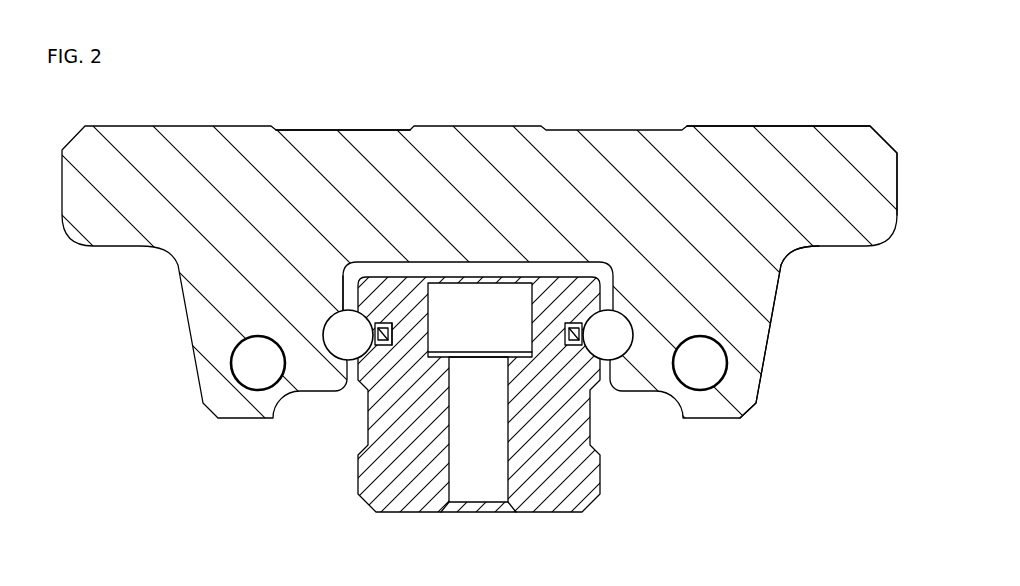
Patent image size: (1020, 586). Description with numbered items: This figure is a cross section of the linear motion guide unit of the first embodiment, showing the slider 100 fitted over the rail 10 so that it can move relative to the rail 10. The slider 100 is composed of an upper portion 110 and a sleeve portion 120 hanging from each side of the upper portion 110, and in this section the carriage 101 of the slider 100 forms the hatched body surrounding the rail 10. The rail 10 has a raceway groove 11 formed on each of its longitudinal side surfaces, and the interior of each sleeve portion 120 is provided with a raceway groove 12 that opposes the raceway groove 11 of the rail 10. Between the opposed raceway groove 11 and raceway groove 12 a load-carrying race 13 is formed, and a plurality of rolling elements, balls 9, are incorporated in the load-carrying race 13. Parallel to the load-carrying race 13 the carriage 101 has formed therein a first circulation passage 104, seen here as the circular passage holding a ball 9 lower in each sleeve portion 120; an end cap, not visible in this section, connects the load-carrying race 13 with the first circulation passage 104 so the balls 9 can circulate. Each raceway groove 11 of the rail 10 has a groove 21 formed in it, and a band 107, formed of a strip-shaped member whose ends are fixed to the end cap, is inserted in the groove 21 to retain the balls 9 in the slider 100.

The slider 100 is at (482, 138).
The upper portion 110 is at (324, 130).
The carriage 101 is at (788, 153).
The sleeve portion 120 is at (758, 299).
The rail 10 is at (545, 495).
The ball 9 is at (702, 380).
The raceway groove 12 is at (327, 350).
The first circulation passage 104 is at (258, 380).
The load-carrying race 13 is at (326, 331).
The raceway groove 11 is at (387, 345).
The groove 21 is at (395, 335).
The band 107 is at (573, 345).